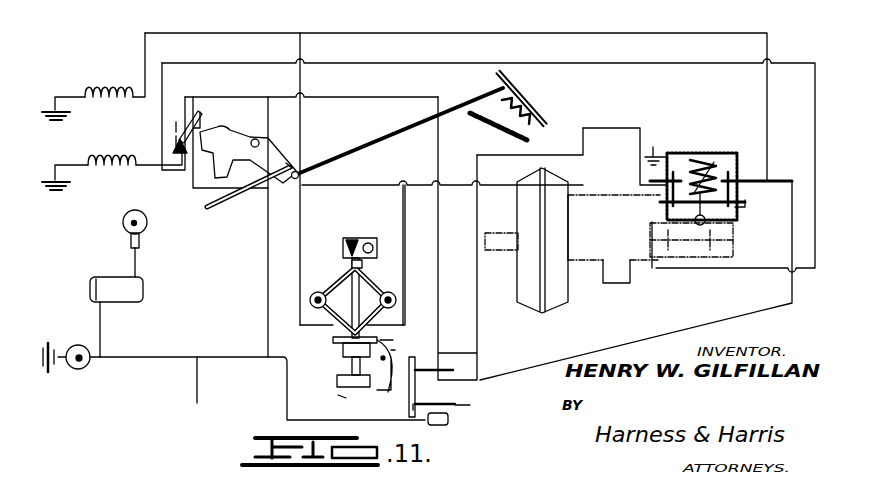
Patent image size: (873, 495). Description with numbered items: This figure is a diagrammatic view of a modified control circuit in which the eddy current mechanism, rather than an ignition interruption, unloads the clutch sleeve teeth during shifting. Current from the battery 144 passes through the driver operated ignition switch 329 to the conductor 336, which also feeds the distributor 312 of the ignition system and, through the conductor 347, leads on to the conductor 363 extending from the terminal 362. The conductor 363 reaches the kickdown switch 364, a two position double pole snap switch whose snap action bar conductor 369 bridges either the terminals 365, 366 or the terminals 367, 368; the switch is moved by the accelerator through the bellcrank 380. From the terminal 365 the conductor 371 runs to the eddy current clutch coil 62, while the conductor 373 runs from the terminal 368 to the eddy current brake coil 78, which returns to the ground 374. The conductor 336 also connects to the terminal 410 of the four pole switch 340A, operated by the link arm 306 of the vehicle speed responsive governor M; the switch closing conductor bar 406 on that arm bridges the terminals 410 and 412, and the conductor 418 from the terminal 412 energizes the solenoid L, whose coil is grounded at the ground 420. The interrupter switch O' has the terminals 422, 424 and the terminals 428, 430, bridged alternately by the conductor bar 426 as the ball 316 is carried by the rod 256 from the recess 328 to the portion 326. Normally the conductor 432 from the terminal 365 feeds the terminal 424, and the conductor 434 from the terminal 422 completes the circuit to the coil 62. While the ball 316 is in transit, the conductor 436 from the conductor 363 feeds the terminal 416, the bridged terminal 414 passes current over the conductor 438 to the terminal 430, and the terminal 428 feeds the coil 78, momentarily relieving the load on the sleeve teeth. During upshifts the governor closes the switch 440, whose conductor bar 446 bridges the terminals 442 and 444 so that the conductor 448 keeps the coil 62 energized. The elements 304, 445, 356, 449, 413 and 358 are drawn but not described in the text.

The conductor 434 is at (212, 33).
The conductor 432 is at (208, 63).
The conductor 363 is at (215, 97).
The conductor 436 is at (378, 91).
The eddy current clutch coil 62 is at (95, 99).
The conductor 371 is at (51, 122).
The eddy current brake coil 78 is at (104, 171).
The ground 374 is at (51, 190).
The terminal 367 is at (176, 107).
The kickdown switch 364 is at (176, 127).
The snap action bar conductor 369 is at (176, 140).
The terminal 365 is at (180, 152).
The conductor 373 is at (150, 173).
The terminal 366 is at (199, 127).
The bellcrank 380 is at (229, 134).
The terminal 368 is at (209, 147).
The conductor bar 446 is at (342, 166).
The switch 440 is at (368, 177).
The conductor 448 is at (305, 217).
The vehicle speed responsive governor M is at (338, 288).
The switch block 304 is at (369, 243).
The terminal 442 is at (320, 328).
The shaft 445 is at (340, 352).
The link arm 306 is at (353, 387).
The contact 356 is at (338, 398).
The switch closing conductor bar 406 is at (413, 406).
The terminal 444 is at (398, 325).
The contact 449 is at (393, 341).
The terminal 412 is at (395, 353).
The terminal 414 is at (418, 381).
The terminal 416 is at (418, 369).
The contact 413 is at (430, 406).
The terminal 410 is at (438, 423).
The four pole switch 340A is at (456, 408).
The conductor 336 is at (141, 356).
The terminal 362 is at (270, 403).
The conductor 347 is at (197, 395).
The ignition switch 329 is at (74, 372).
The battery 144 is at (51, 343).
The battery 358 is at (133, 287).
The distributor 312 is at (148, 228).
The conductor 438 is at (624, 345).
The conductor 418 is at (477, 292).
The rod 256 is at (504, 252).
The terminal 424 is at (640, 212).
The terminal 428 is at (642, 177).
The solenoid L is at (627, 130).
The terminal 430 is at (728, 153).
The ground 420 is at (664, 152).
The terminal 422 is at (748, 209).
The conductor bar 426 is at (733, 222).
The ball 316 is at (732, 232).
The recess 328 is at (662, 262).
The portion 326 is at (715, 262).